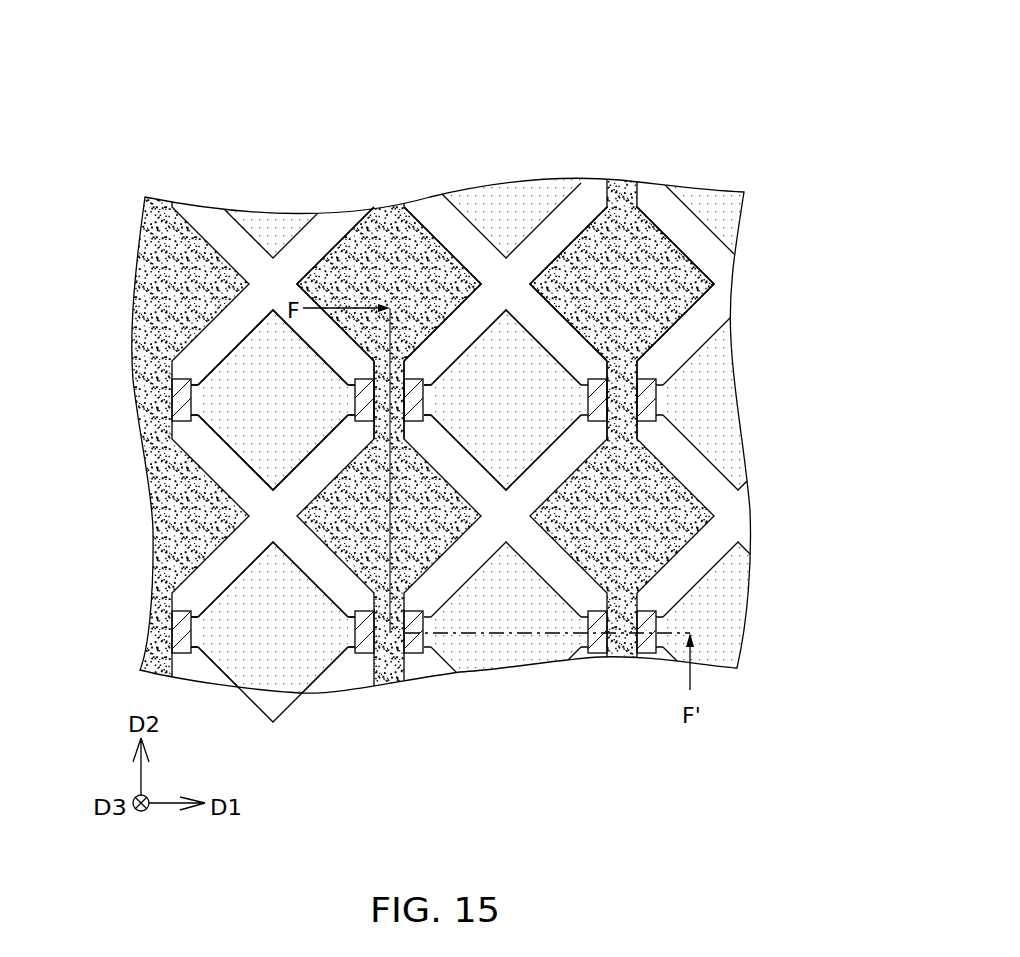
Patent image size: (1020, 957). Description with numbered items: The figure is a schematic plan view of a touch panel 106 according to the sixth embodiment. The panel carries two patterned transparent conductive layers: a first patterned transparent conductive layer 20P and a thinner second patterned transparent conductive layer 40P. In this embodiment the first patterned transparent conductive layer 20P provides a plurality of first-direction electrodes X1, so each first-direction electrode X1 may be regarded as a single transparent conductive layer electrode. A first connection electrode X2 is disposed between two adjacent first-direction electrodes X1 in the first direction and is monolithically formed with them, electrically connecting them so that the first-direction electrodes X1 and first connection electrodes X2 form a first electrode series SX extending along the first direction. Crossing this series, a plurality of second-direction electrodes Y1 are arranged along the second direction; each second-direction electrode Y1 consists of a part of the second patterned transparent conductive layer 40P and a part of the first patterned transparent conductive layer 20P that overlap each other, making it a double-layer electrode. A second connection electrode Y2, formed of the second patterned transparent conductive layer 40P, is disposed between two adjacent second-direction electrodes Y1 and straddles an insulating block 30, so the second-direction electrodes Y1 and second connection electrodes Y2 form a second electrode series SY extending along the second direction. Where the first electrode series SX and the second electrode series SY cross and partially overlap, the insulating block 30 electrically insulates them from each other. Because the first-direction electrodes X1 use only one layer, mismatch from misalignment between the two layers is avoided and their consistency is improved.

The touch panel 106 is at (727, 110).
The first patterned transparent conductive layer 20P is at (600, 477).
The second patterned transparent conductive layer 40P is at (502, 400).
The insulating block 30 is at (603, 645).
The second electrode series SY is at (597, 122).
The first electrode series SX is at (65, 632).
The second-direction electrode Y1 is at (640, 473).
The second connection electrode Y2 is at (632, 393).
The first-direction electrode X1 is at (465, 650).
The first connection electrode X2 is at (355, 633).